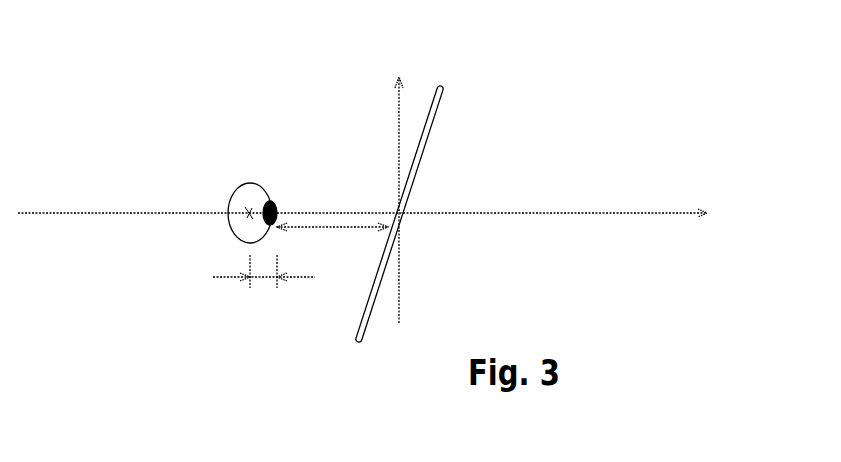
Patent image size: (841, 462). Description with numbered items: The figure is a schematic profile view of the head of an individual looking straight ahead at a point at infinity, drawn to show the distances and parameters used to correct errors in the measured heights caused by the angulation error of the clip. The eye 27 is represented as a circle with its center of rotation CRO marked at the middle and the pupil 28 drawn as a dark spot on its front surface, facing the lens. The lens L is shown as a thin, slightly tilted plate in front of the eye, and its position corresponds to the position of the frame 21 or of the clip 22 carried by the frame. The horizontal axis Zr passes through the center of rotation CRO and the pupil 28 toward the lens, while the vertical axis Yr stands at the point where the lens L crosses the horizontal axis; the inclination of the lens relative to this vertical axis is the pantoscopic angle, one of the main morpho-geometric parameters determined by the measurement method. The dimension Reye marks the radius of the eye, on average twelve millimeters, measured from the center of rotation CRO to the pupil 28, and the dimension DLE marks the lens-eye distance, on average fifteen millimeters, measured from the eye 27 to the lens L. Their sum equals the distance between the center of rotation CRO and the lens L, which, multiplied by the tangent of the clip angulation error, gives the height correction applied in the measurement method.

The frame 21 is at (443, 100).
The clip 22 is at (422, 156).
The eye 27 is at (258, 197).
The pupil 28 is at (272, 203).
The center of rotation of the eye CRO is at (249, 211).
The lens L is at (412, 192).
The Y axis of reference frame Yr is at (397, 183).
The Z axis of reference frame Zr is at (368, 227).
The lens-eye distance DLE is at (332, 238).
The radius of the eye Reye is at (264, 286).